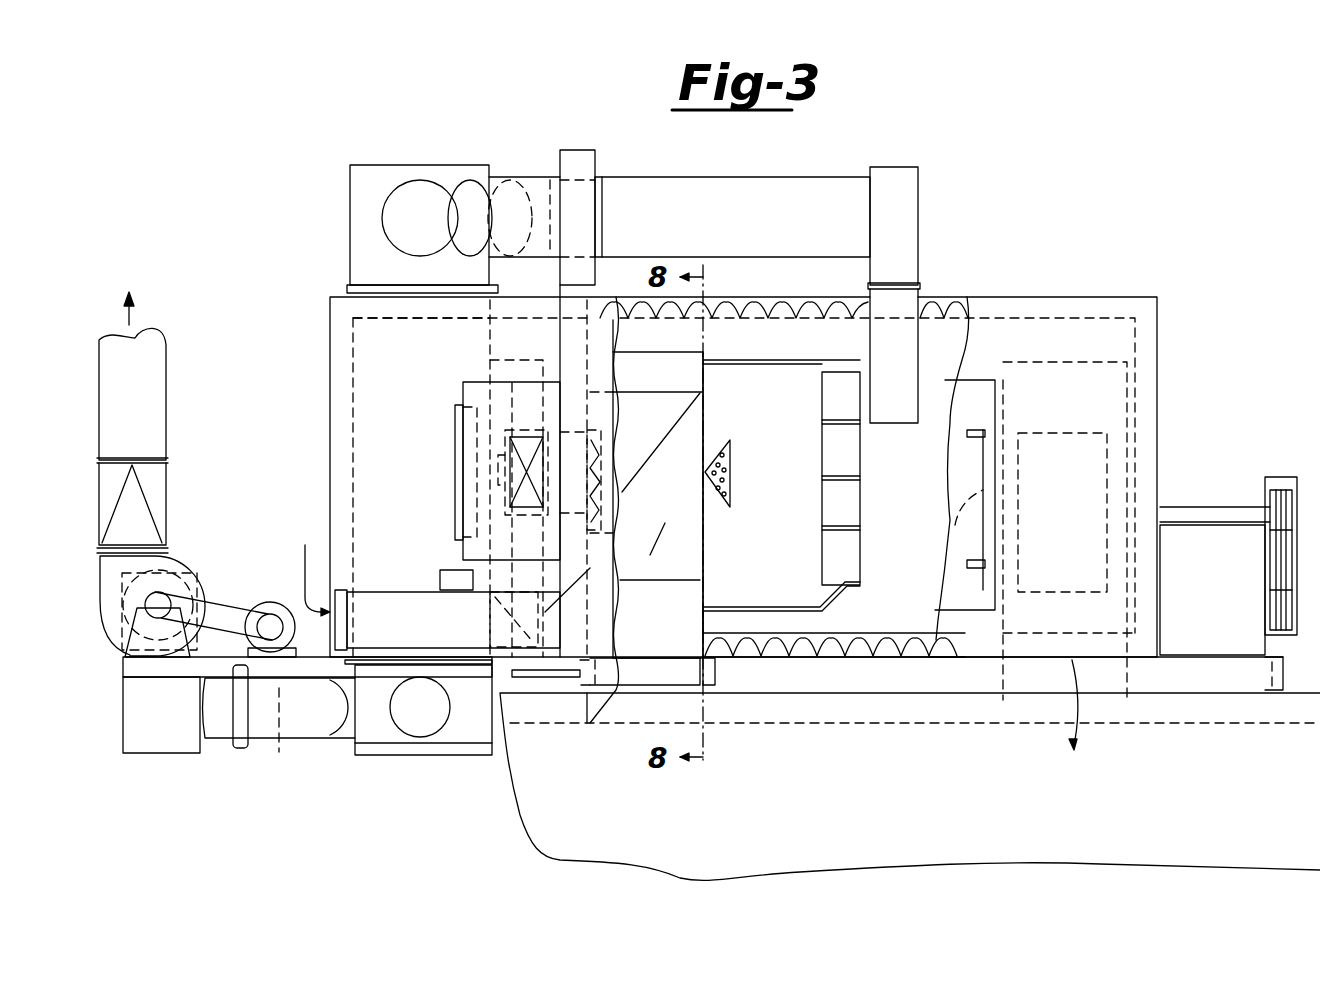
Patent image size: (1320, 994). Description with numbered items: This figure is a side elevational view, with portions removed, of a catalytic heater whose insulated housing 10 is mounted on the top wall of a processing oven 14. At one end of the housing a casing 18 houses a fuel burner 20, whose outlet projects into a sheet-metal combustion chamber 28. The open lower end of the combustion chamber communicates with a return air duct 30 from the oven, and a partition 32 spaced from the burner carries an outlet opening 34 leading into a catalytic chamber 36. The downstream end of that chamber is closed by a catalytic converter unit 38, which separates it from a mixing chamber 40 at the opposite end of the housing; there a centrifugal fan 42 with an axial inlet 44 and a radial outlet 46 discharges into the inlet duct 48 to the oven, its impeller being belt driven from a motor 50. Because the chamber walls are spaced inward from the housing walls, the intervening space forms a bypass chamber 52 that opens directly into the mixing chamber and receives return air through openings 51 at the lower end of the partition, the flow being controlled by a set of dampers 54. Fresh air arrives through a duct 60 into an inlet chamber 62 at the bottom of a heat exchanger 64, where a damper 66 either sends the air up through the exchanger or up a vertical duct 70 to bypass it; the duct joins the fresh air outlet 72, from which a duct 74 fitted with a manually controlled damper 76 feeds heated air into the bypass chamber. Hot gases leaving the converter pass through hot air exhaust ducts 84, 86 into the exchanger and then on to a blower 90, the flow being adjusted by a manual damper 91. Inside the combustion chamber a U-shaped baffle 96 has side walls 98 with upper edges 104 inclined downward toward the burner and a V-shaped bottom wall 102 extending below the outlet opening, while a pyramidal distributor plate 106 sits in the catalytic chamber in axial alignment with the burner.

The housing 10 is at (1160, 262).
The processing oven 14 is at (866, 784).
The casing 18 is at (463, 387).
The fuel burner 20 is at (605, 465).
The combustion chamber 28 is at (672, 368).
The return air duct 30 is at (640, 718).
The partition 32 is at (718, 558).
The outlet opening 34 is at (705, 410).
The catalytic chamber 36 is at (788, 378).
The catalytic converter unit 38 is at (818, 459).
The mixing chamber 40 is at (942, 393).
The centrifugal fan 42 is at (1112, 360).
The axial inlet 44 is at (959, 524).
The radial outlet 46 is at (1115, 678).
The inlet duct 48 is at (1120, 712).
The motor 50 is at (1212, 540).
The openings 51 is at (705, 620).
The bypass chamber 52 is at (773, 302).
The dampers 54 is at (680, 636).
The duct 60 is at (410, 556).
The inlet chamber 62 is at (490, 627).
The heat exchanger 64 is at (343, 278).
The damper 66 is at (579, 578).
The vertical duct 70 is at (510, 370).
The fresh air outlet 72 is at (500, 318).
The duct 74 is at (613, 335).
The manually controlled damper 76 is at (625, 330).
The hot air exhaust duct 84 is at (912, 220).
The hot air exhaust duct 86 is at (783, 155).
The blower 90 is at (175, 565).
The manual damper 91 is at (282, 752).
The baffle 96 is at (703, 450).
The side walls 98 is at (720, 507).
The bottom wall 102 is at (670, 525).
The upper edges 104 is at (665, 428).
The distributor plate 106 is at (735, 465).